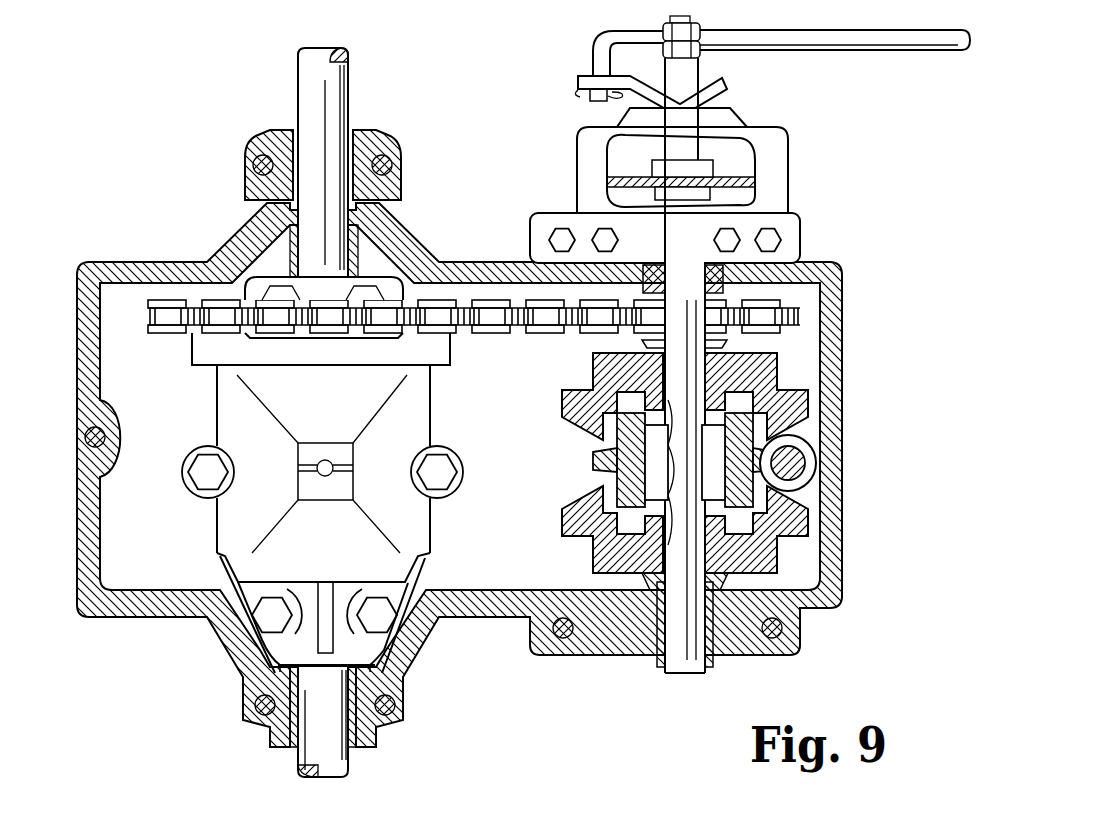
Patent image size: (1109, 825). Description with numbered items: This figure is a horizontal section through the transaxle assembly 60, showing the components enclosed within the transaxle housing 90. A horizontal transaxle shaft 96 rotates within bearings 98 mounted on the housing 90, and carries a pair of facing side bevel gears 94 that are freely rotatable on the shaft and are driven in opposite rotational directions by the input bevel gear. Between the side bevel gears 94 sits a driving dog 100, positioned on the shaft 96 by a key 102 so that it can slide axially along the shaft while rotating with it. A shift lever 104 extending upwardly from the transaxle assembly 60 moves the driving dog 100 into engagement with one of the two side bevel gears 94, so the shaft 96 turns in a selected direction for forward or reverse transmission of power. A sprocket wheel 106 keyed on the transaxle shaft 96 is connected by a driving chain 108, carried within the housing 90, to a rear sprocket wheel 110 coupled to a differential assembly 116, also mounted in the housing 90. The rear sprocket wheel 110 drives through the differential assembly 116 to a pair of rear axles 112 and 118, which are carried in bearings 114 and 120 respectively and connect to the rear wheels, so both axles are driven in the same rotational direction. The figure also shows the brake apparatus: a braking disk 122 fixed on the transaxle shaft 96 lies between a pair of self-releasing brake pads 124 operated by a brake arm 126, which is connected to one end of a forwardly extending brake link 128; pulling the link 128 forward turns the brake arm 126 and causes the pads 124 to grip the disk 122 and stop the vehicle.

The transaxle assembly 60 is at (449, 216).
The transaxle housing 90 is at (487, 262).
The side bevel gears 94 is at (765, 368).
The transaxle shaft 96 is at (675, 668).
The bearings 98 is at (677, 276).
The driving dog 100 is at (753, 407).
The key 102 is at (665, 445).
The shift lever 104 is at (790, 462).
The sprocket wheel 106 is at (605, 316).
The driving chain 108 is at (498, 333).
The rear sprocket wheel 110 is at (243, 318).
The rear axle 112 is at (338, 98).
The bearing 114 is at (343, 158).
The differential assembly 116 is at (207, 505).
The rear axle 118 is at (363, 760).
The bearing 120 is at (352, 723).
The braking disk 122 is at (712, 182).
The brake pads 124 is at (712, 165).
The brake arm 126 is at (727, 88).
The brake link 128 is at (907, 45).